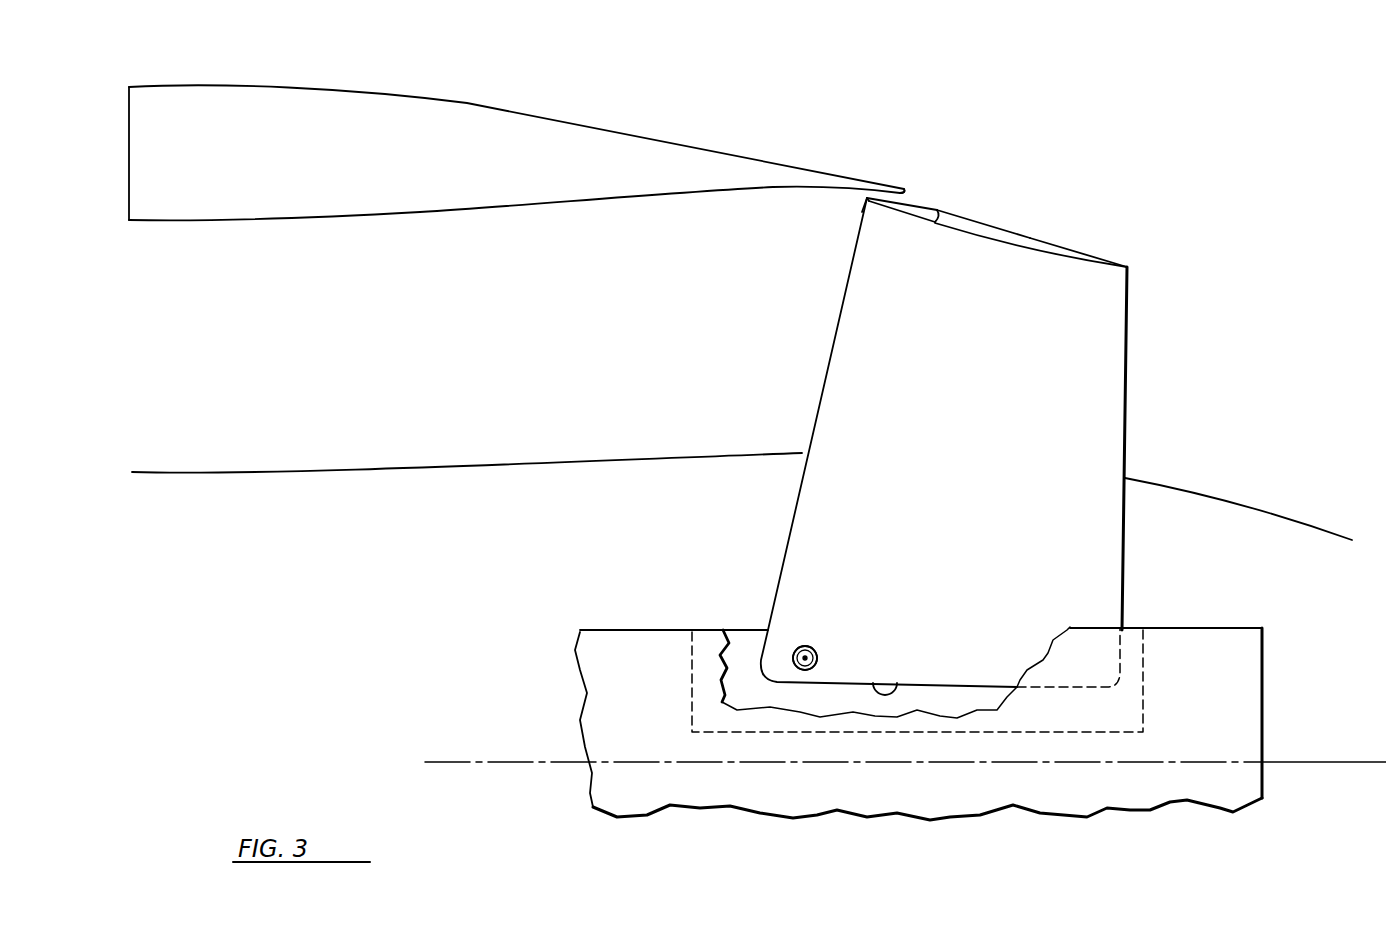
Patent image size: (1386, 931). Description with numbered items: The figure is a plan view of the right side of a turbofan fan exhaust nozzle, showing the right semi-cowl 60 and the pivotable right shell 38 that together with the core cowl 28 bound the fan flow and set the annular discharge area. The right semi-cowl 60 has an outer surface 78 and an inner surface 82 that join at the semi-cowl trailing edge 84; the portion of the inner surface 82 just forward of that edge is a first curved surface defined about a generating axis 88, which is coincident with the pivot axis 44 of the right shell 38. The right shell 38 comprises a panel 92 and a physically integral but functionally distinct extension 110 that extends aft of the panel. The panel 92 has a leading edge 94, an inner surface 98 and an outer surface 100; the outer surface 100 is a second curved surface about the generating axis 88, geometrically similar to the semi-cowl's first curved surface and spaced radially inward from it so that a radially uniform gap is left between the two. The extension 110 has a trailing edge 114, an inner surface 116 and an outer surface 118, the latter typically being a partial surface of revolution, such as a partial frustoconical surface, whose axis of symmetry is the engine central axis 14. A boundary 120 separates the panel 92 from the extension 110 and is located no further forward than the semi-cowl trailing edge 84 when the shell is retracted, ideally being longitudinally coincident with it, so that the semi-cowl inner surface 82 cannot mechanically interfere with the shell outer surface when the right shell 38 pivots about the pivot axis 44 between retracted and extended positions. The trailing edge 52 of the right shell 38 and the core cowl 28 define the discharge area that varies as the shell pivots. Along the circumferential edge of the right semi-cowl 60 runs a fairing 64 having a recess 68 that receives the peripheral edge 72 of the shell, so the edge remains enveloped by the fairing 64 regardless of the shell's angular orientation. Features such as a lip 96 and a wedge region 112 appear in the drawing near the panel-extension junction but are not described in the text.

The central axis 14 is at (1310, 765).
The core cowl 28 is at (1174, 495).
The right shell 38 is at (1013, 204).
The pivot axis 44 is at (815, 648).
The trailing edge 52 is at (1127, 367).
The right semi-cowl 60 is at (517, 157).
The fairing 64 is at (918, 690).
The recess 68 is at (693, 670).
The peripheral edge 72 is at (900, 682).
The outer surface 78 is at (469, 103).
The inner surface 82 is at (419, 213).
The semi-cowl trailing edge 84 is at (905, 188).
The generating axis 88 is at (800, 647).
The panel 92 is at (913, 203).
The leading edge 94 is at (860, 196).
The lip 96 is at (936, 222).
The inner surface 98 is at (887, 213).
The outer surface 100 is at (1080, 241).
The extension 110 is at (970, 227).
The wedge portion 112 is at (908, 210).
The trailing edge 114 is at (1130, 267).
The inner surface 116 is at (1030, 255).
The outer surface 118 is at (1047, 240).
The boundary 120 is at (935, 222).